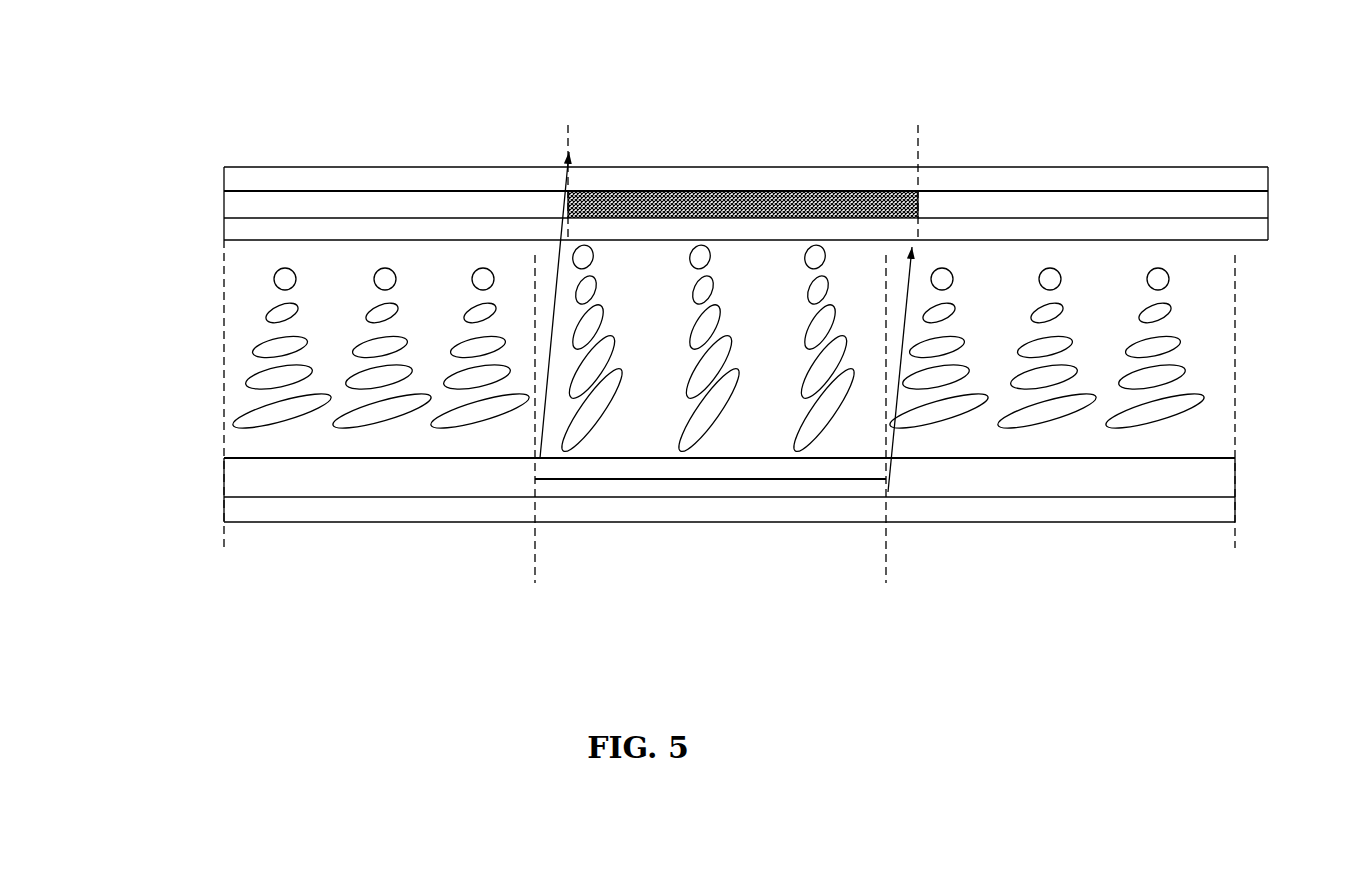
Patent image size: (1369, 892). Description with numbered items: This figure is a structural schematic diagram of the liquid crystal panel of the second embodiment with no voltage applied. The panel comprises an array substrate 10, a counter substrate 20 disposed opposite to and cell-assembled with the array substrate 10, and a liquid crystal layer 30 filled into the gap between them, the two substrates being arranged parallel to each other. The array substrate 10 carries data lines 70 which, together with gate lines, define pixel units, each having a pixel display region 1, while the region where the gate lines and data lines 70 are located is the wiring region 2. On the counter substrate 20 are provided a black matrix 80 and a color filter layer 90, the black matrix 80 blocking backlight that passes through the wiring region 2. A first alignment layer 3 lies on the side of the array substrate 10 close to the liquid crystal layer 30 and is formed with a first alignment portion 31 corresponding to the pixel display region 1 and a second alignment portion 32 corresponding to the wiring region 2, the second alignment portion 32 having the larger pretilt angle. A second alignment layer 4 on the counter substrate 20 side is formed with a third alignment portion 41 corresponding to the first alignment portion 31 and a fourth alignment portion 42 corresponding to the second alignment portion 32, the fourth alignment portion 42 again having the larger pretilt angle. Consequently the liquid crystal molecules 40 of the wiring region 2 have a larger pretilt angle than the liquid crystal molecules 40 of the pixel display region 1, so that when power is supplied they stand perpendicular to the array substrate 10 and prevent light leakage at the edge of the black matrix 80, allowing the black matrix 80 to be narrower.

The pixel display region 1 is at (375, 533).
The wiring region 2 is at (669, 533).
The first alignment layer 3 is at (1240, 464).
The second alignment layer 4 is at (1268, 230).
The array substrate 10 is at (237, 512).
The counter substrate 20 is at (238, 173).
The liquid crystal layer 30 is at (222, 292).
The first alignment portion 31 is at (465, 475).
The second alignment portion 32 is at (811, 467).
The liquid crystal molecules 40 is at (583, 257).
The third alignment portion 41 is at (415, 230).
The fourth alignment portion 42 is at (760, 227).
The data lines 70 is at (745, 487).
The black matrix 80 is at (700, 190).
The color filter layer 90 is at (352, 203).